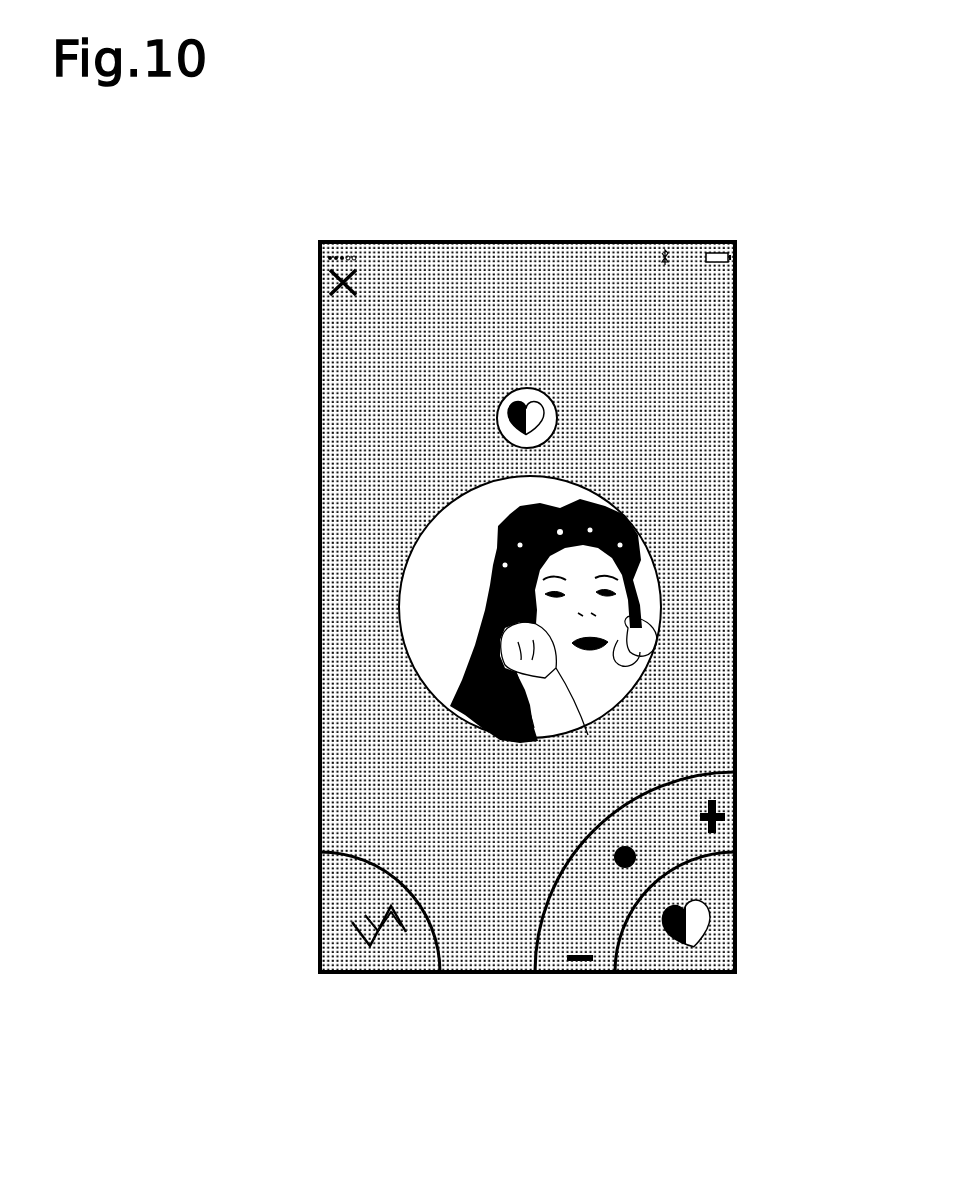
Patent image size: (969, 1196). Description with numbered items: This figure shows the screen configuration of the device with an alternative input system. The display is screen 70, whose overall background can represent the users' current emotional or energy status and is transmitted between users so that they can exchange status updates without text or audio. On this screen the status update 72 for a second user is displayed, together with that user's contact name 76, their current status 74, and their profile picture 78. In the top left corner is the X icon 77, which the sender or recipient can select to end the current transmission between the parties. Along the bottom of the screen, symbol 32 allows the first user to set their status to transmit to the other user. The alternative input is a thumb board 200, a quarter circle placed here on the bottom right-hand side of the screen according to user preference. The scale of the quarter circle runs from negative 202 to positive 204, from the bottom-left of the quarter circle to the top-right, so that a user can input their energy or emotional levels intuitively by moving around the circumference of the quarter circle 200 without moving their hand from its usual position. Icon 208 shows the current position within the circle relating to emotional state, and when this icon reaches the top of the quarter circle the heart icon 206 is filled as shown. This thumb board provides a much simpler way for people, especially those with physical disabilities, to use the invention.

The screen 70 is at (720, 436).
The status update 72 is at (560, 424).
The current status 74 is at (582, 340).
The contact name 76 is at (494, 281).
The X icon 77 is at (330, 275).
The profile picture 78 is at (655, 640).
The symbol 32 is at (393, 928).
The thumb board 200 is at (717, 963).
The negative 202 is at (580, 961).
The positive 204 is at (723, 813).
The heart icon 206 is at (712, 918).
The icon 208 is at (636, 856).